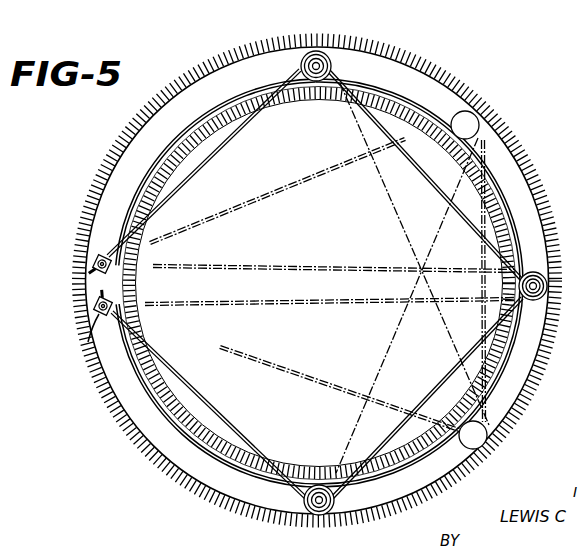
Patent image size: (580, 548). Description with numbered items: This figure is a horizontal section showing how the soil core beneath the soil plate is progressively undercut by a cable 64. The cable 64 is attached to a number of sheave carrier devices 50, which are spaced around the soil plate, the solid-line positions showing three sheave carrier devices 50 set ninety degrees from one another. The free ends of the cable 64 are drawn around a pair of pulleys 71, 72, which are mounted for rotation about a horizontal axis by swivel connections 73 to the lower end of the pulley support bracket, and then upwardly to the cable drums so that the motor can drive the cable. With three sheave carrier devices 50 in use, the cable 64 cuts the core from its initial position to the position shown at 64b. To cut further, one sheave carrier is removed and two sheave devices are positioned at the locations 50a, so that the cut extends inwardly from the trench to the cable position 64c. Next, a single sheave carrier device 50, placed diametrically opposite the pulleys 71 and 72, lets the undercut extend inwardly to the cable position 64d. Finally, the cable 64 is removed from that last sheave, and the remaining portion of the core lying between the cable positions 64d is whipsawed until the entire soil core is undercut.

The sheave carrier device 50 is at (322, 47).
The sheave carrier device position 50a is at (484, 116).
The cable 64 is at (131, 348).
The cable position 64b is at (232, 430).
The cable position 64c is at (330, 172).
The cable position 64d is at (383, 298).
The pulley 71 is at (90, 312).
The pulley 72 is at (92, 279).
The swivel connection 73 is at (89, 348).